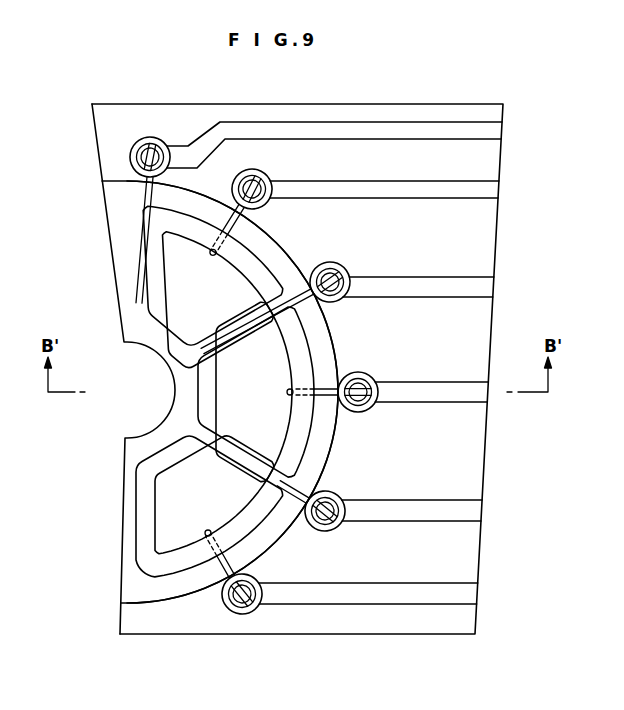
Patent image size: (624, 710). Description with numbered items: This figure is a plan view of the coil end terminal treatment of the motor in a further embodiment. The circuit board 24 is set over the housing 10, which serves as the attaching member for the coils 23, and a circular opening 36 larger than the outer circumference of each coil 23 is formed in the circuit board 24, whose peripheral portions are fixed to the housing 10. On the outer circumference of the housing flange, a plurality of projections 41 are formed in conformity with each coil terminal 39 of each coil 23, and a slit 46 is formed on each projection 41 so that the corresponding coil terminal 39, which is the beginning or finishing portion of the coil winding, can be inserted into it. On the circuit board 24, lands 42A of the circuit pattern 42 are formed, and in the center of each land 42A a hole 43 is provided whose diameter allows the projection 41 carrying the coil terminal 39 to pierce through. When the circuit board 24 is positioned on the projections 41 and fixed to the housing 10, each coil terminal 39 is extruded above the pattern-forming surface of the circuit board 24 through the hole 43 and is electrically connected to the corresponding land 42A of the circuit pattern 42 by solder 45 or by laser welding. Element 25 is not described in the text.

The housing 10 is at (114, 448).
The coil 23 is at (152, 271).
The circuit board 24 is at (406, 641).
The lower window 25 is at (165, 506).
The circular opening 36 is at (152, 598).
The coil terminal 39 is at (234, 221).
The projection 41 is at (271, 183).
The circuit pattern 42 is at (433, 512).
The land 42A is at (328, 531).
The hole 43 is at (369, 376).
The solder 45 is at (347, 270).
The slit 46 is at (359, 412).